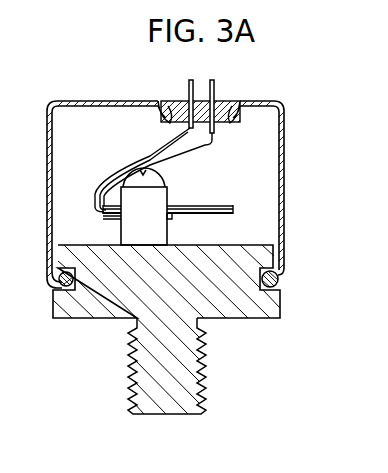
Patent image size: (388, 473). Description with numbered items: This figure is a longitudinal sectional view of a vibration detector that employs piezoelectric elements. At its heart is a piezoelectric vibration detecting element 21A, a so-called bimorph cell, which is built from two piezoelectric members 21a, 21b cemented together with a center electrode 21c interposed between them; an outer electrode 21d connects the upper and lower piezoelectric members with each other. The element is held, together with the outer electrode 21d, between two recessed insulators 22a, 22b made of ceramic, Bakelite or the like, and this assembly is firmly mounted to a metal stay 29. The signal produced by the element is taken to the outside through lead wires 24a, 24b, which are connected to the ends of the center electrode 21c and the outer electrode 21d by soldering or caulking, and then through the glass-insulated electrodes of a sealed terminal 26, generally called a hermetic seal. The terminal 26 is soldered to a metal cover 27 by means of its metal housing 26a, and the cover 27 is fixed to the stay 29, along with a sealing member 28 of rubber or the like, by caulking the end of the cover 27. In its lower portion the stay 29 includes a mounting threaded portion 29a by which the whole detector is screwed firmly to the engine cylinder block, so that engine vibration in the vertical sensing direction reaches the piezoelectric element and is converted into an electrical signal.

The piezoelectric vibration detecting element 21A is at (207, 204).
The piezoelectric member 21a is at (232, 207).
The piezoelectric member 21b is at (229, 214).
The center electrode 21c is at (236, 213).
The outer electrode 21d is at (105, 222).
The insulator 22a is at (167, 231).
The insulator 22b is at (168, 194).
The lead wire 24a is at (214, 138).
The lead wire 24b is at (126, 154).
The sealed terminal 26 is at (232, 100).
The metal housing 26a is at (168, 103).
The metal cover 27 is at (285, 163).
The sealing member 28 is at (281, 278).
The metal stay 29 is at (254, 318).
The mounting threaded portion 29a is at (205, 372).